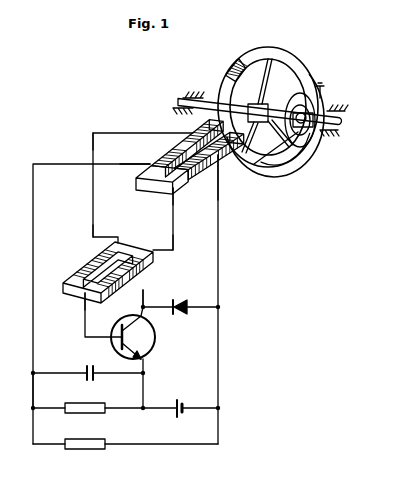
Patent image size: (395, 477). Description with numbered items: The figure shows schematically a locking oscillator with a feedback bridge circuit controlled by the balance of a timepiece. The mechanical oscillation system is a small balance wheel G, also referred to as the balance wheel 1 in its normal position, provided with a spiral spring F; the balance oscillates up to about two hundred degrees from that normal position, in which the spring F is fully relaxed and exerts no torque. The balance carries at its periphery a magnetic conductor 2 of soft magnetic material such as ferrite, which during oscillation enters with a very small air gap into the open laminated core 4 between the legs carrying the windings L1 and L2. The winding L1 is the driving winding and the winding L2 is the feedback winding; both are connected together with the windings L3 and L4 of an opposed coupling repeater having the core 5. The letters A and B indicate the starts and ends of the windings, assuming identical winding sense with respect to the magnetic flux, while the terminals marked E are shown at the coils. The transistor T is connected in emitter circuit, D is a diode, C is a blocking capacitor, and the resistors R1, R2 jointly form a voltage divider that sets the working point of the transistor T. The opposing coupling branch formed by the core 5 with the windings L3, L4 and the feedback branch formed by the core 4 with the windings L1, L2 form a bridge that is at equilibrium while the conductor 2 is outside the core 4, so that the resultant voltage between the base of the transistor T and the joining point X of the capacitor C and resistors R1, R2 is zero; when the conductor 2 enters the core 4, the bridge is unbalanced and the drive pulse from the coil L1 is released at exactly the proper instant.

The balance wheel 1 is at (276, 177).
The magnetic conductor 2 is at (229, 73).
The open laminated core 4 is at (142, 191).
The core of opposed coupling repeater 5 is at (139, 246).
The balance wheel G is at (289, 52).
The spiral spring F is at (328, 101).
The driving winding L1 is at (208, 164).
The feedback winding L2 is at (181, 148).
The winding of opposed coupling repeater L3 is at (135, 277).
The winding of opposed coupling repeater L4 is at (94, 259).
The coil end terminal E is at (155, 193).
The winding starts A is at (122, 238).
The diode D is at (180, 298).
The transistor T is at (155, 338).
The blocking capacitor C is at (92, 364).
The joining point X is at (25, 390).
The resistor R1 is at (85, 435).
The resistor R2 is at (85, 399).
The winding ends B is at (180, 399).